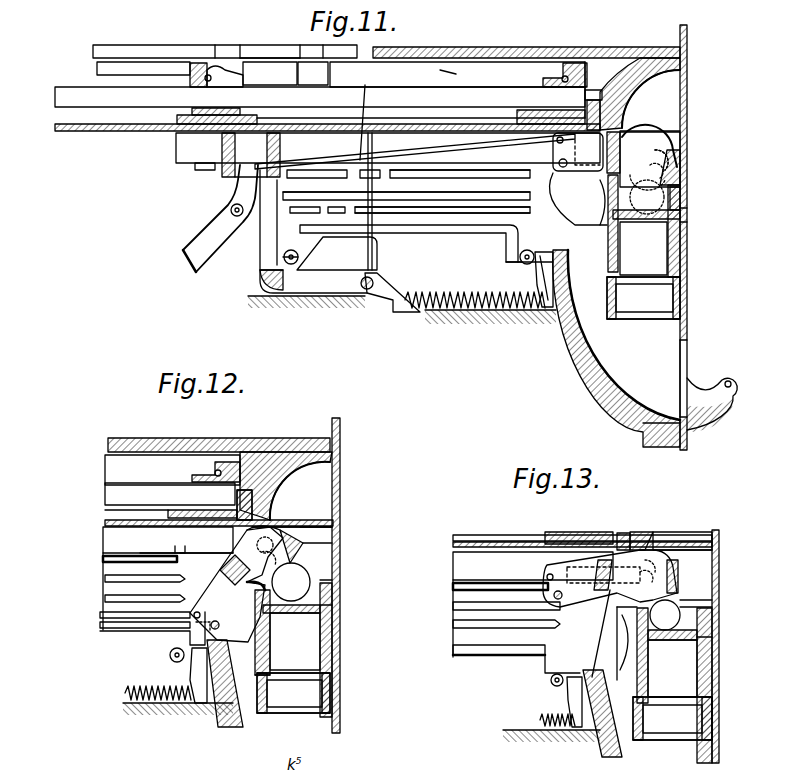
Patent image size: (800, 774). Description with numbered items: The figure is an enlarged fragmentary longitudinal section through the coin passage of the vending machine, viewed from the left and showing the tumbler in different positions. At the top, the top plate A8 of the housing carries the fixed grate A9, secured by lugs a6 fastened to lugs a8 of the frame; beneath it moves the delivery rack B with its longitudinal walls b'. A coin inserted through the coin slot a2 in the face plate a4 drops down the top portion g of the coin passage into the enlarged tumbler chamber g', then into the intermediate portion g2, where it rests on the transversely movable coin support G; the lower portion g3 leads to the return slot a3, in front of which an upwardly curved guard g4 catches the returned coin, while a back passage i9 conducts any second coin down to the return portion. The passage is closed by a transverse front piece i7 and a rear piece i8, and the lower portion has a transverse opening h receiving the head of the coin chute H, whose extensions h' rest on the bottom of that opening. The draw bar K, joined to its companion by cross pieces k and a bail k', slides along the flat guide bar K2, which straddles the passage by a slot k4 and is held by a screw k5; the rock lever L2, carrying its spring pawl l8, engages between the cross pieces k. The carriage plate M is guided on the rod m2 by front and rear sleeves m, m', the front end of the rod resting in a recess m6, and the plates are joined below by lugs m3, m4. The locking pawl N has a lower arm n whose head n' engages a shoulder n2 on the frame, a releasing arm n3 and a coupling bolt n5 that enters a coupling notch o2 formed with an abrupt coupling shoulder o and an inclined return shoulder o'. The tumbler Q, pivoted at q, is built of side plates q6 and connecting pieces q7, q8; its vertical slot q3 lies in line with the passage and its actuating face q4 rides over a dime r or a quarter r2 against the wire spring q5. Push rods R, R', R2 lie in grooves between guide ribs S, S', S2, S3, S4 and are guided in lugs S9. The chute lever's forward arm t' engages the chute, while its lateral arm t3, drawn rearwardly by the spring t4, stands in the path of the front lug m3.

In FIG. 11, the top plate A8 is at (490, 47).
In FIG. 12, the top plate A8 is at (145, 438).
In FIG. 11, the fixed grate A9 is at (178, 34).
In FIG. 11, the coin slot a2 is at (687, 110).
In FIG. 12, the coin slot a2 is at (340, 500).
In FIG. 13, the coin slot a2 is at (719, 545).
In FIG. 11, the return slot a3 is at (687, 350).
In FIG. 11, the face plate a4 is at (687, 210).
In FIG. 12, the face plate a4 is at (340, 610).
In FIG. 13, the face plate a4 is at (719, 650).
In FIG. 11, the lugs a6 is at (312, 36).
In FIG. 11, the lugs of the frame a8 is at (285, 73).
In FIG. 11, the movable delivery rack B is at (417, 73).
In FIG. 12, the movable delivery rack B is at (105, 465).
In FIG. 11, the longitudinal walls b' is at (459, 42).
In FIG. 11, the coin support G is at (687, 222).
In FIG. 12, the coin support G is at (340, 590).
In FIG. 11, the top portion of coin passage g is at (651, 99).
In FIG. 12, the top portion of coin passage g is at (300, 491).
In FIG. 13, the top portion of coin passage g is at (682, 529).
In FIG. 11, the tumbler chamber g' is at (674, 135).
In FIG. 12, the tumbler chamber g' is at (338, 520).
In FIG. 13, the tumbler chamber g' is at (718, 593).
In FIG. 11, the intermediate portion of coin passage g2 is at (643, 248).
In FIG. 12, the intermediate portion of coin passage g2 is at (295, 641).
In FIG. 13, the intermediate portion of coin passage g2 is at (672, 663).
In FIG. 11, the lower portion of coin passage g3 is at (616, 348).
In FIG. 12, the lower portion of coin passage g3 is at (249, 693).
In FIG. 13, the lower portion of coin passage g3 is at (630, 719).
In FIG. 11, the curved guard g4 is at (735, 398).
In FIG. 11, the coin chute H is at (643, 298).
In FIG. 12, the coin chute H is at (293, 693).
In FIG. 13, the coin chute H is at (672, 718).
In FIG. 11, the transverse opening h is at (661, 298).
In FIG. 12, the transverse opening h is at (312, 691).
In FIG. 13, the transverse opening h is at (692, 708).
In FIG. 11, the extensions h' is at (658, 312).
In FIG. 12, the extensions h' is at (311, 704).
In FIG. 13, the extensions h' is at (693, 751).
In FIG. 11, the transverse front piece i7 is at (680, 253).
In FIG. 12, the transverse front piece i7 is at (332, 635).
In FIG. 13, the transverse front piece i7 is at (719, 668).
In FIG. 11, the transverse rear piece i8 is at (608, 240).
In FIG. 12, the transverse rear piece i8 is at (258, 645).
In FIG. 13, the transverse rear piece i8 is at (637, 680).
In FIG. 11, the back passage i9 is at (593, 262).
In FIG. 12, the back passage i9 is at (253, 680).
In FIG. 13, the back passage i9 is at (614, 654).
In FIG. 11, the right hand draw bar K is at (182, 143).
In FIG. 12, the right hand draw bar K is at (103, 540).
In FIG. 13, the right hand draw bar K is at (453, 565).
In FIG. 11, the guide bar K2 is at (175, 115).
In FIG. 12, the guide bar K2 is at (105, 520).
In FIG. 13, the guide bar K2 is at (453, 545).
In FIG. 11, the cross pieces k is at (232, 167).
In FIG. 11, the bail k' is at (190, 147).
In FIG. 11, the slot k4 is at (637, 58).
In FIG. 12, the slot k4 is at (292, 511).
In FIG. 11, the screw k5 is at (593, 100).
In FIG. 12, the screw k5 is at (269, 505).
In FIG. 13, the screw k5 is at (623, 533).
In FIG. 11, the rock lever L2 is at (190, 262).
In FIG. 11, the spring pawl l8 is at (236, 233).
In FIG. 11, the right hand plate of carriage M is at (435, 232).
In FIG. 12, the right hand plate of carriage M is at (105, 575).
In FIG. 13, the right hand plate of carriage M is at (453, 612).
In FIG. 11, the front sleeve m is at (565, 49).
In FIG. 12, the front sleeve m is at (216, 446).
In FIG. 11, the rear sleeve m' is at (185, 74).
In FIG. 11, the guide rod m2 is at (320, 96).
In FIG. 12, the guide rod m2 is at (170, 494).
In FIG. 11, the front lug m3 is at (522, 262).
In FIG. 12, the front lug m3 is at (170, 655).
In FIG. 13, the front lug m3 is at (550, 682).
In FIG. 11, the rear lug m4 is at (284, 258).
In FIG. 11, the recess m6 is at (602, 90).
In FIG. 12, the recess m6 is at (258, 482).
In FIG. 11, the locking pawl N is at (330, 296).
In FIG. 11, the lower arm n is at (354, 283).
In FIG. 11, the head n' is at (323, 318).
In FIG. 11, the shoulder n2 is at (378, 298).
In FIG. 11, the right hand releasing arm n3 is at (262, 280).
In FIG. 11, the right hand coupling bolt n5 is at (372, 262).
In FIG. 11, the coupling shoulder o is at (410, 173).
In FIG. 12, the coupling shoulder o is at (206, 545).
In FIG. 11, the return shoulder o' is at (406, 169).
In FIG. 12, the return shoulder o' is at (152, 545).
In FIG. 12, the foremost coupling notch o2 is at (200, 545).
In FIG. 11, the tumbler Q is at (687, 162).
In FIG. 12, the tumbler Q is at (310, 548).
In FIG. 13, the tumbler Q is at (712, 560).
In FIG. 11, the pivot q is at (631, 157).
In FIG. 12, the pivot q is at (252, 548).
In FIG. 13, the pivot q is at (617, 575).
In FIG. 11, the vertical slot q3 is at (687, 178).
In FIG. 12, the vertical slot q3 is at (270, 560).
In FIG. 13, the vertical slot q3 is at (648, 579).
In FIG. 11, the actuating face q4 is at (680, 195).
In FIG. 12, the actuating face q4 is at (303, 550).
In FIG. 13, the actuating face q4 is at (680, 588).
In FIG. 11, the wire spring q5 is at (465, 148).
In FIG. 11, the side plates q6 is at (555, 132).
In FIG. 12, the side plates q6 is at (218, 585).
In FIG. 13, the side plates q6 is at (590, 532).
In FIG. 11, the connecting piece q7 is at (705, 160).
In FIG. 12, the connecting piece q7 is at (330, 515).
In FIG. 11, the connecting piece q8 is at (606, 199).
In FIG. 12, the connecting piece q8 is at (222, 625).
In FIG. 11, the upper push rod R is at (408, 159).
In FIG. 11, the middle push rod R' is at (330, 253).
In FIG. 11, the lower push rod R2 is at (470, 233).
In FIG. 12, the lower push rod R2 is at (130, 635).
In FIG. 13, the dime r is at (665, 615).
In FIG. 12, the quarter of a dollar r2 is at (291, 582).
In FIG. 11, the upper guide rib S is at (469, 179).
In FIG. 12, the upper guide rib S is at (103, 552).
In FIG. 13, the upper guide rib S is at (492, 579).
In FIG. 11, the lower guide rib S' is at (420, 191).
In FIG. 12, the lower guide rib S' is at (110, 585).
In FIG. 13, the lower guide rib S' is at (484, 595).
In FIG. 11, the lower guide rib S2 is at (530, 210).
In FIG. 12, the lower guide rib S2 is at (105, 598).
In FIG. 13, the lower guide rib S2 is at (453, 624).
In FIG. 11, the lower guide rib S3 is at (463, 213).
In FIG. 12, the lower guide rib S3 is at (100, 614).
In FIG. 13, the lower guide rib S3 is at (453, 648).
In FIG. 11, the lower guide rib S4 is at (559, 242).
In FIG. 12, the lower guide rib S4 is at (172, 645).
In FIG. 13, the lower guide rib S4 is at (557, 658).
In FIG. 11, the lugs S9 is at (278, 314).
In FIG. 11, the forwardly projecting arm t' is at (500, 279).
In FIG. 11, the lateral arm t3 is at (540, 300).
In FIG. 12, the lateral arm t3 is at (192, 665).
In FIG. 13, the lateral arm t3 is at (567, 695).
In FIG. 11, the spring t4 is at (475, 300).
In FIG. 12, the spring t4 is at (125, 693).
In FIG. 13, the spring t4 is at (540, 722).